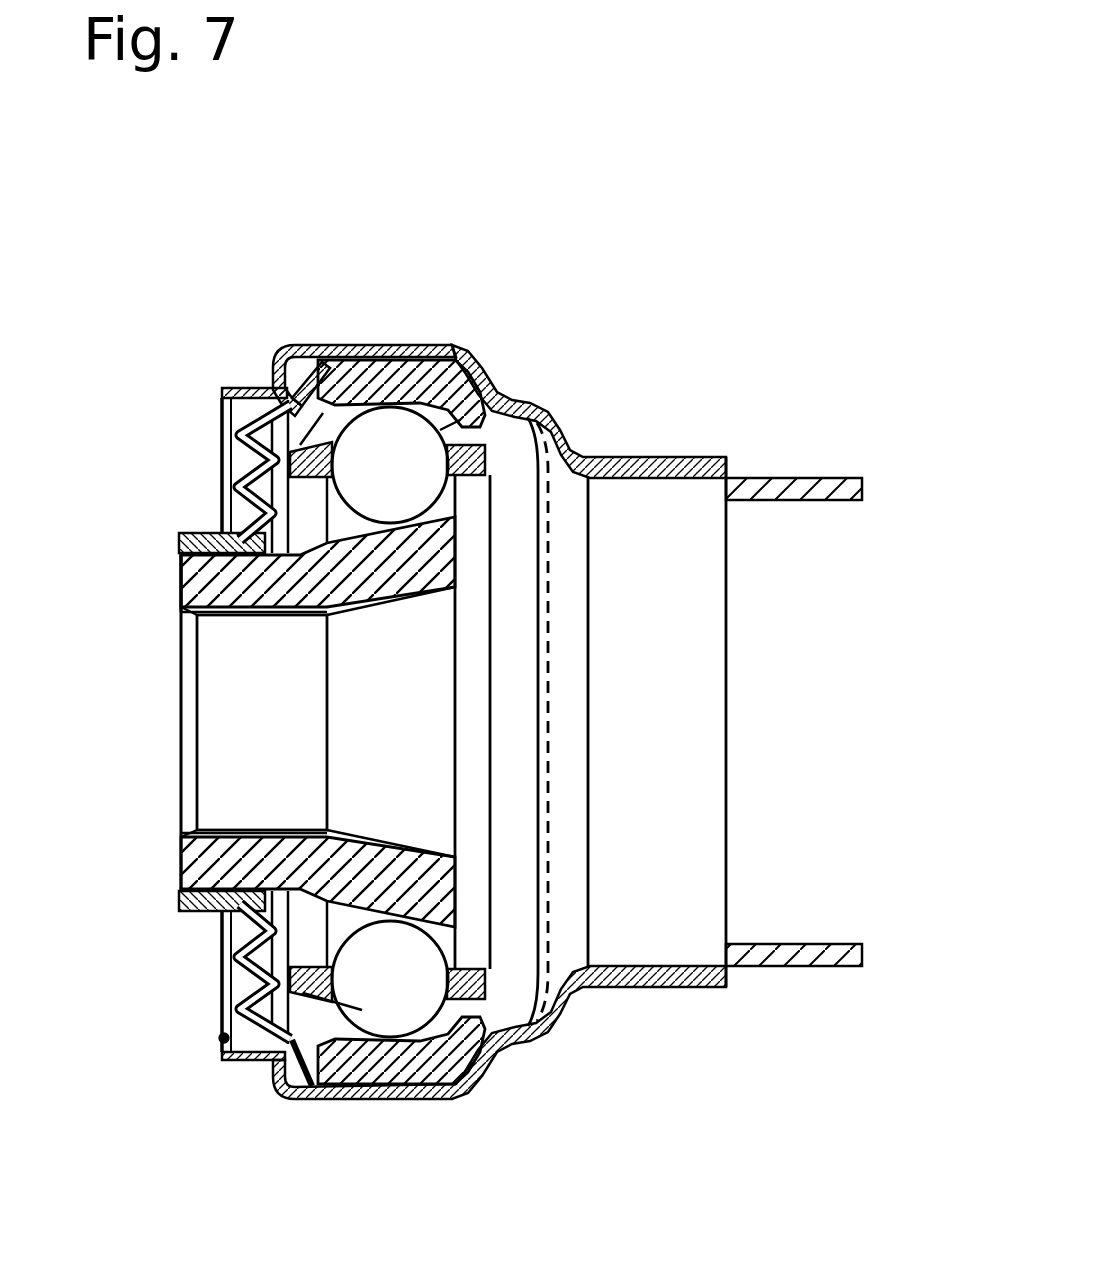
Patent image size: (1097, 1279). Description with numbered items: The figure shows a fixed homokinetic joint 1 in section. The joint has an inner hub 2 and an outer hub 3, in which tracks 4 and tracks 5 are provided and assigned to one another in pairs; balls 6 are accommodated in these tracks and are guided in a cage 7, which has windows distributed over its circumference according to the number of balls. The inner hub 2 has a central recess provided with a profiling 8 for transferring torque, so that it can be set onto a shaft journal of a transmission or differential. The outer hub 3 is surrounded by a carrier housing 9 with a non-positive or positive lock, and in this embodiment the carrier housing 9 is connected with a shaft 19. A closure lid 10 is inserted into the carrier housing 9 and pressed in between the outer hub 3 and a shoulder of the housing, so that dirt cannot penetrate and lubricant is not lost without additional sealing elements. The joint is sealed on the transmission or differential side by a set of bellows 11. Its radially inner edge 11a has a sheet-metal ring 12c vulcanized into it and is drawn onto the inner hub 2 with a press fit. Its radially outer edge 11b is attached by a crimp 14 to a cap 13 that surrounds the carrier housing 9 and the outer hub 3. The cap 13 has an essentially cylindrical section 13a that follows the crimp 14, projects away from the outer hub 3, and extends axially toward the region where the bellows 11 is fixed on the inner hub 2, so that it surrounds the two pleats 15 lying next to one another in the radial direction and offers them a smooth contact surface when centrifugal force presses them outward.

The fixed joint 1 is at (569, 303).
The inner hub 2 is at (197, 853).
The outer hub 3 is at (443, 1103).
The tracks 4 is at (440, 508).
The tracks 5 is at (462, 425).
The balls 6 is at (323, 1092).
The cage 7 is at (492, 1050).
The profiling 8 is at (222, 722).
The carrier housing 9 is at (672, 985).
The closure lid 10 is at (563, 1012).
The set of bellows 11 is at (225, 533).
The radially inner edge 11a is at (180, 587).
The radially outer edge 11b is at (280, 1090).
The sheet-metal ring 12c is at (228, 536).
The cap 13 is at (333, 347).
The section 13a is at (222, 393).
The crimp 14 is at (264, 354).
The pleats 15 is at (222, 1040).
The shaft 19 is at (790, 476).